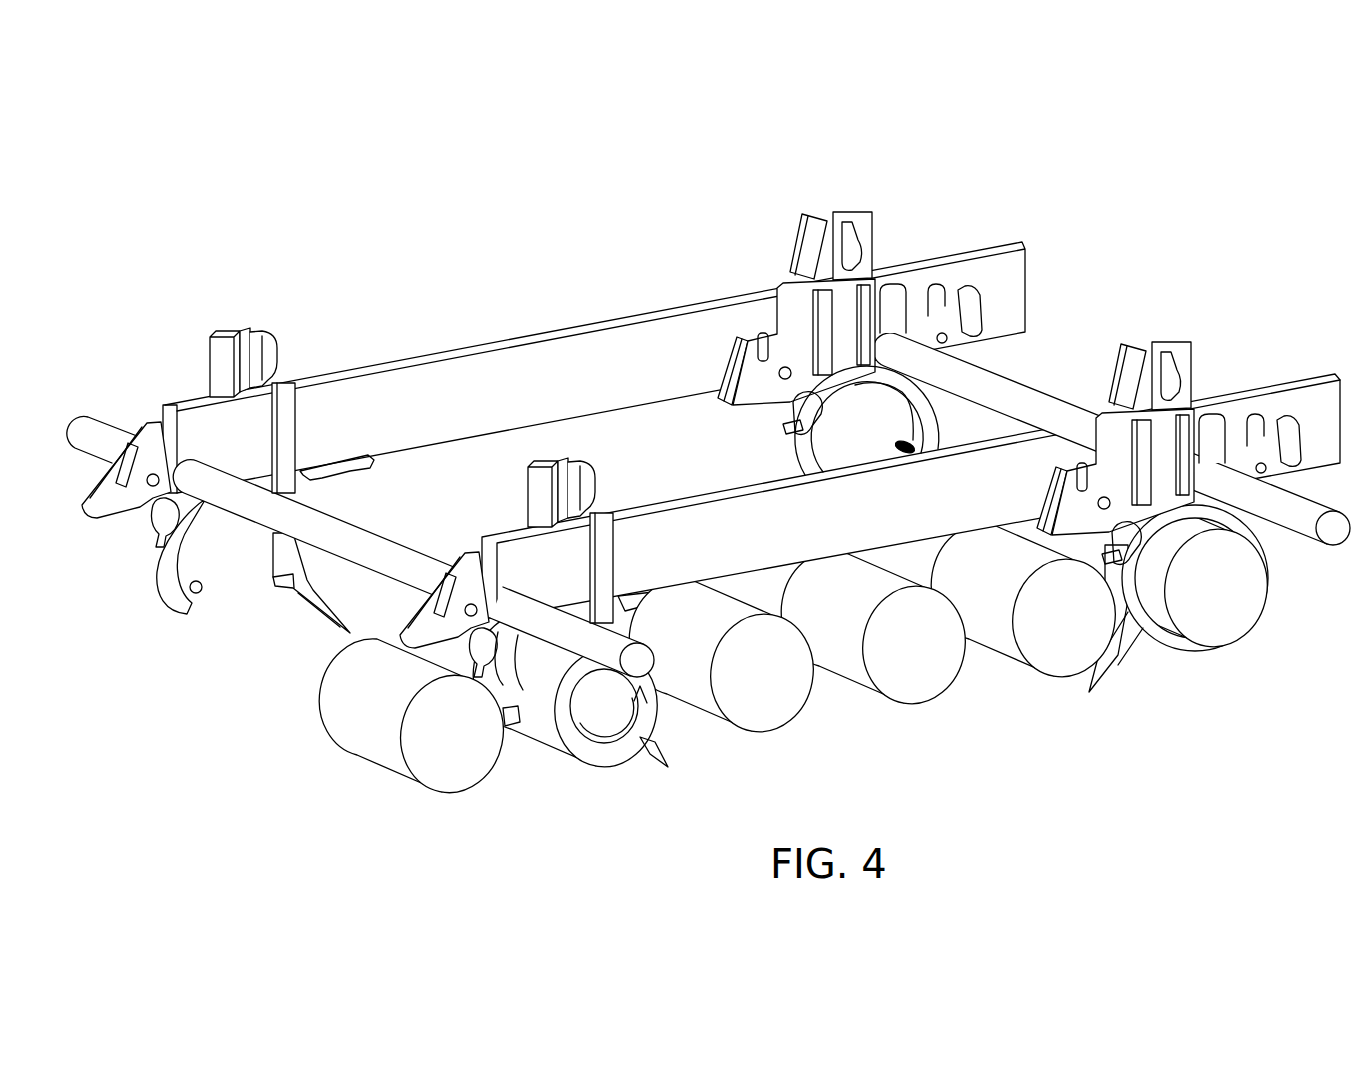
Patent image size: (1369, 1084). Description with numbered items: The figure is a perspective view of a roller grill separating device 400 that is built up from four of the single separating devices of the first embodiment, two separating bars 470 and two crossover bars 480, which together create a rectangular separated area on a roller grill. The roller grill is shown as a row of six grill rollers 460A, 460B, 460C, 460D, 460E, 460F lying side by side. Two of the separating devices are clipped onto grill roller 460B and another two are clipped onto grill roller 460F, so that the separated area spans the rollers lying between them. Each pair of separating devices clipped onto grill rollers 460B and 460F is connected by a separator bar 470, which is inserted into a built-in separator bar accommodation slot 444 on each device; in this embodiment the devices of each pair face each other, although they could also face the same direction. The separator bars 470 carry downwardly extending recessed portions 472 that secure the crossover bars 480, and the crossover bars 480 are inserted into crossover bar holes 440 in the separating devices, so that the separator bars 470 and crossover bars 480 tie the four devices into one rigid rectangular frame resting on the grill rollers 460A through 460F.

The roller grill separating device 400 is at (700, 496).
The crossover bar hole 440 is at (1028, 268).
The separator bar accommodation slot 444 is at (288, 430).
The grill roller 460A is at (460, 743).
The grill roller 460B is at (614, 712).
The grill roller 460C is at (777, 678).
The grill roller 460D is at (920, 644).
The grill roller 460E is at (1068, 617).
The grill roller 460F is at (1222, 585).
The separator bar 470 is at (487, 387).
The recessed portion 472 is at (167, 407).
The crossover bar 480 is at (1030, 402).